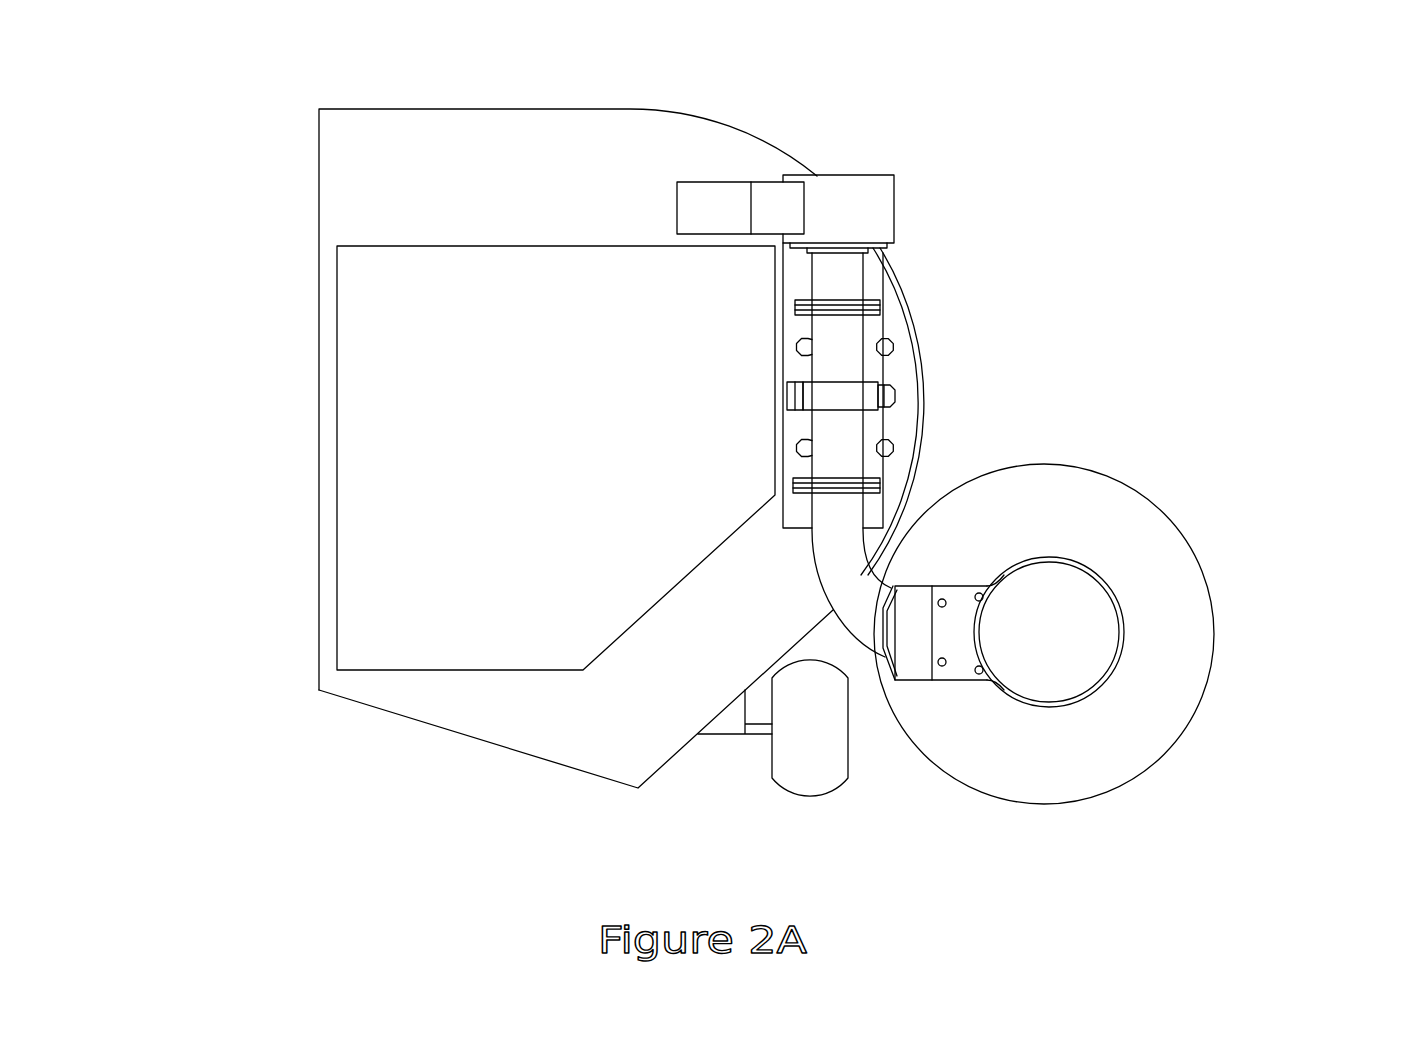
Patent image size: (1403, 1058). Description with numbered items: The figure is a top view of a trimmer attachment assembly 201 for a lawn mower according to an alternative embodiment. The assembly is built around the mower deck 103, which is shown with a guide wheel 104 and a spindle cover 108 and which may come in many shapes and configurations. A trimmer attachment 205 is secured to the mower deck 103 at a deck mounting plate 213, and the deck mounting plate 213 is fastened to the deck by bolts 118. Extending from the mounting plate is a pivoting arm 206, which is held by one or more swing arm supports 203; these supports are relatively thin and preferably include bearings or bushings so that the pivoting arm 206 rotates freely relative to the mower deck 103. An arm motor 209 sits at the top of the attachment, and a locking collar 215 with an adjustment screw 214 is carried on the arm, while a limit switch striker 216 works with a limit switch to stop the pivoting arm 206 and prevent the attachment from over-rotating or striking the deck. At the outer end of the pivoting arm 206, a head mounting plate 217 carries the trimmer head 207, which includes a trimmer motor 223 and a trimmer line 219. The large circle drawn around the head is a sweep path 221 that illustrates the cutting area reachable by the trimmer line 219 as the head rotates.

The trimmer attachment assembly 201 is at (750, 483).
The mower deck 103 is at (547, 448).
The spindle cover 108 is at (556, 523).
The guide wheel 104 is at (757, 768).
The trimmer attachment 205 is at (1037, 140).
The arm motor 209 is at (907, 201).
The deck mounting plate 213 is at (1000, 385).
The pivoting arm 206 is at (846, 589).
The swing arm supports 203 is at (788, 521).
The bolts 118 is at (664, 429).
The adjustment screw 214 is at (959, 347).
The locking collar 215 is at (1040, 359).
The limit switch striker 216 is at (480, 430).
The trimmer head 207 is at (1243, 497).
The sweep path 221 is at (1079, 627).
The trimmer line 219 is at (1103, 691).
The trimmer motor 223 is at (1073, 729).
The head mounting plate 217 is at (987, 749).